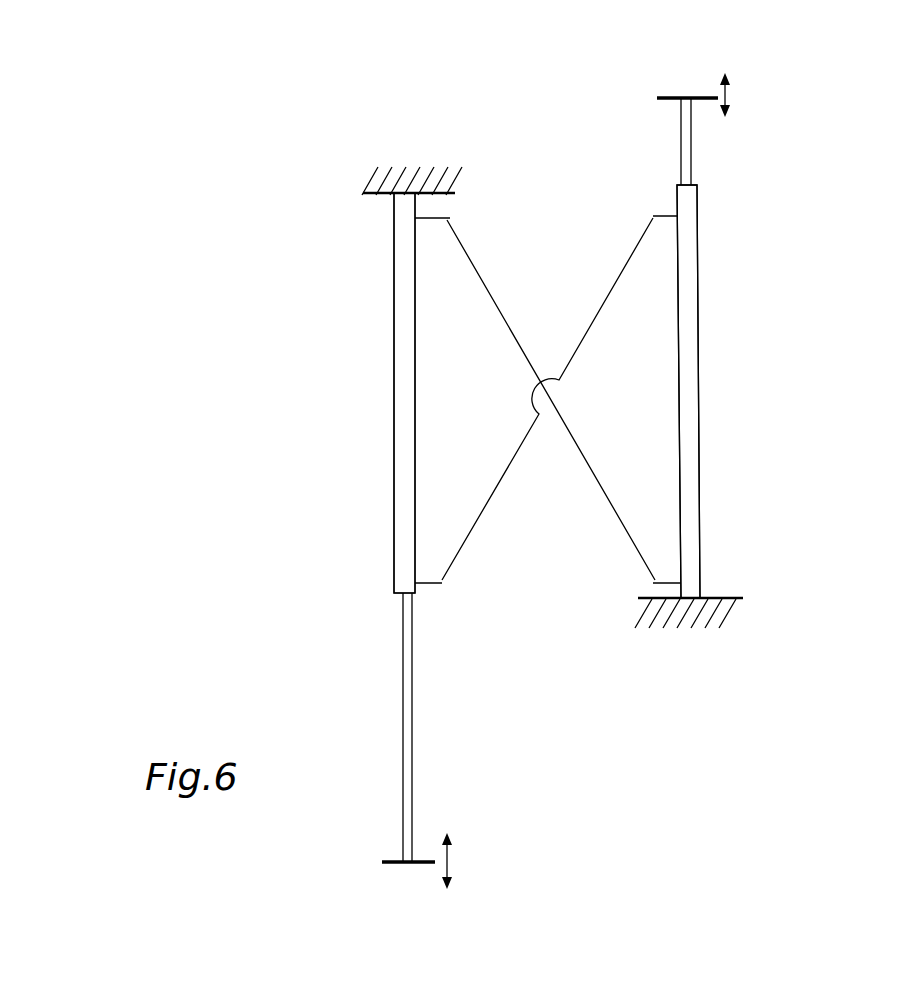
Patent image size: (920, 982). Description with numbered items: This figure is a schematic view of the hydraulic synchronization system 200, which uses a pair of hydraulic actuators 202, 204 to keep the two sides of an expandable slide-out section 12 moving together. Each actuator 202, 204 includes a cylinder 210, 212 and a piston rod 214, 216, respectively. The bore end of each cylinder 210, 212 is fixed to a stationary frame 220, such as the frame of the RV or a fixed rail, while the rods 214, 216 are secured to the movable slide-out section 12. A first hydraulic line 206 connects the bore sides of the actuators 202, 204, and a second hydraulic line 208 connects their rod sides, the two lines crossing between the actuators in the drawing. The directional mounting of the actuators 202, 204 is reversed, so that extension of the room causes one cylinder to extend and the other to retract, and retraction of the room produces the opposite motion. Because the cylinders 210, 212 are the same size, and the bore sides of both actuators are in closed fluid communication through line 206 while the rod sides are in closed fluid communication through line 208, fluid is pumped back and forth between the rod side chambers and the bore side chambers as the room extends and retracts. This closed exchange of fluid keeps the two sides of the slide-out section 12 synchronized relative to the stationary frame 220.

The hydraulic synchronization system 200 is at (858, 130).
The hydraulic actuator 202 is at (388, 371).
The hydraulic actuator 204 is at (706, 375).
The first hydraulic line 206 is at (483, 281).
The second hydraulic line 208 is at (467, 543).
The cylinder 210 is at (394, 488).
The cylinder 212 is at (700, 478).
The piston rod 214 is at (412, 692).
The piston rod 216 is at (692, 160).
The stationary frame 220 is at (372, 194).
The slide-out section 12 is at (395, 858).